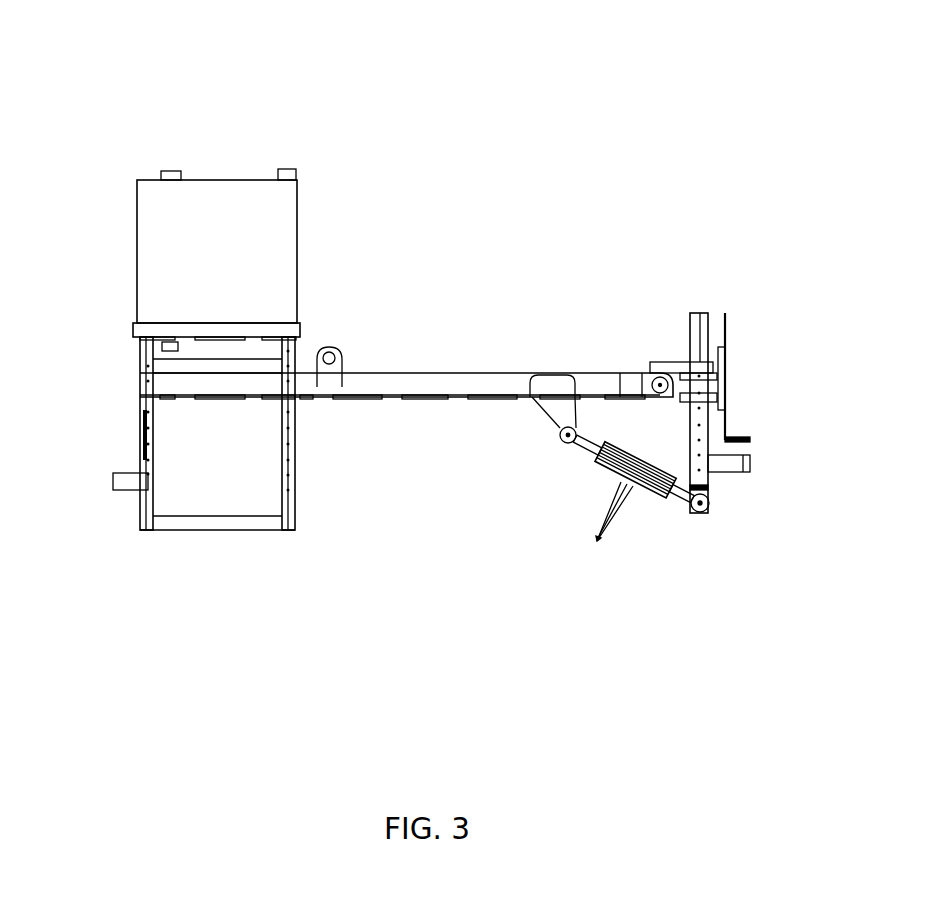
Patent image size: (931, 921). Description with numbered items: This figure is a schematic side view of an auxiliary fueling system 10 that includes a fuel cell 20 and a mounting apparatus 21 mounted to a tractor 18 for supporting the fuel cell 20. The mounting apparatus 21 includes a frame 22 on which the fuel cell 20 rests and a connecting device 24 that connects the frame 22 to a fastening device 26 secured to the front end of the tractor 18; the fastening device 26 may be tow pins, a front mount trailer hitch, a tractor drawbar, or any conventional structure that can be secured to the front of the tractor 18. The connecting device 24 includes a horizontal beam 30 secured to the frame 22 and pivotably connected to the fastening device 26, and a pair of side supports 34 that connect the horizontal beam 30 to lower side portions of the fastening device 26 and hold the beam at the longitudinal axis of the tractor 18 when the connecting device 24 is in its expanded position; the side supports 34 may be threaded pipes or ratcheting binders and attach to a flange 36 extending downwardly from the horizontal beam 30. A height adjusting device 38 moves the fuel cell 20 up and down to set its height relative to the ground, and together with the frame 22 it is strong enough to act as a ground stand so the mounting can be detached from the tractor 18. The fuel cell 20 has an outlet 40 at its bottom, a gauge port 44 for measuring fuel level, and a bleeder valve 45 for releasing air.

The auxiliary fueling system 10 is at (640, 70).
The tractor 18 is at (762, 298).
The fuel cell 20 is at (297, 227).
The mounting apparatus 21 is at (557, 180).
The frame 22 is at (170, 365).
The connecting device 24 is at (468, 320).
The fastening device 26 is at (698, 300).
The horizontal beam 30 is at (450, 398).
The side supports 34 is at (600, 466).
The flange 36 is at (545, 418).
The height adjusting device 38 is at (118, 455).
The outlet 40 is at (152, 347).
The gauge port 44 is at (170, 171).
The bleeder valve 45 is at (285, 169).